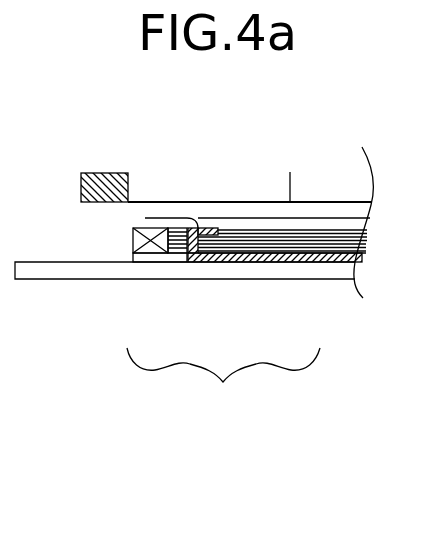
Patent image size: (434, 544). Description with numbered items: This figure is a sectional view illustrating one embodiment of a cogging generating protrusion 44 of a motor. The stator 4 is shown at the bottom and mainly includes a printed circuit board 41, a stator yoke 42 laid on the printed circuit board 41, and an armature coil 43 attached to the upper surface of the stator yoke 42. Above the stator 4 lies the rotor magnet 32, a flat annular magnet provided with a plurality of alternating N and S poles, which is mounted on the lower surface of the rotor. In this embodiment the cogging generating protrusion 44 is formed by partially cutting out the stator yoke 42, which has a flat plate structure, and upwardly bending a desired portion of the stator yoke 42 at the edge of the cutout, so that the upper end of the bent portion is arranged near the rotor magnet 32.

The stator 4 is at (223, 381).
The rotor magnet 32 is at (172, 187).
The printed circuit board 41 is at (122, 270).
The stator yoke 42 is at (230, 263).
The armature coil 43 is at (293, 263).
The cogging generating protrusion 44 is at (145, 218).